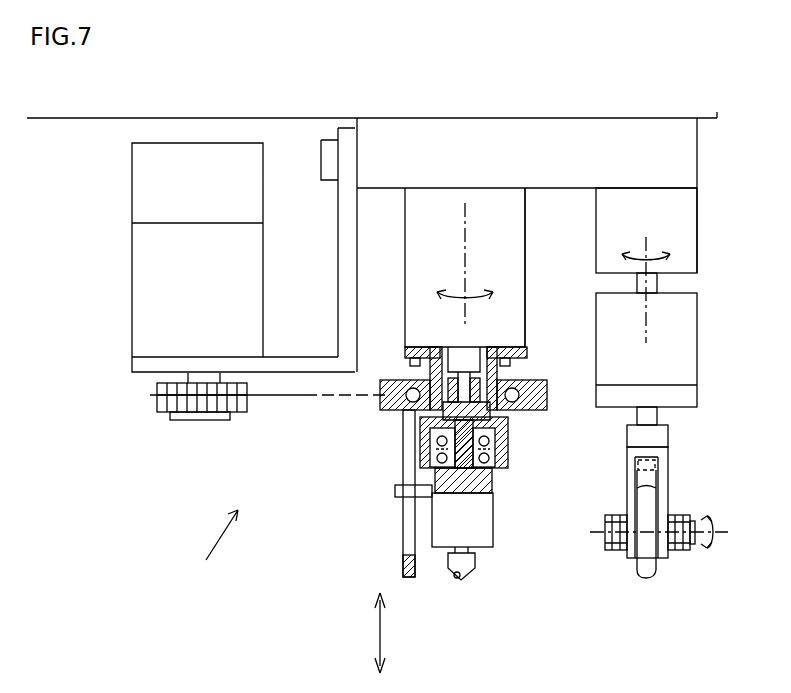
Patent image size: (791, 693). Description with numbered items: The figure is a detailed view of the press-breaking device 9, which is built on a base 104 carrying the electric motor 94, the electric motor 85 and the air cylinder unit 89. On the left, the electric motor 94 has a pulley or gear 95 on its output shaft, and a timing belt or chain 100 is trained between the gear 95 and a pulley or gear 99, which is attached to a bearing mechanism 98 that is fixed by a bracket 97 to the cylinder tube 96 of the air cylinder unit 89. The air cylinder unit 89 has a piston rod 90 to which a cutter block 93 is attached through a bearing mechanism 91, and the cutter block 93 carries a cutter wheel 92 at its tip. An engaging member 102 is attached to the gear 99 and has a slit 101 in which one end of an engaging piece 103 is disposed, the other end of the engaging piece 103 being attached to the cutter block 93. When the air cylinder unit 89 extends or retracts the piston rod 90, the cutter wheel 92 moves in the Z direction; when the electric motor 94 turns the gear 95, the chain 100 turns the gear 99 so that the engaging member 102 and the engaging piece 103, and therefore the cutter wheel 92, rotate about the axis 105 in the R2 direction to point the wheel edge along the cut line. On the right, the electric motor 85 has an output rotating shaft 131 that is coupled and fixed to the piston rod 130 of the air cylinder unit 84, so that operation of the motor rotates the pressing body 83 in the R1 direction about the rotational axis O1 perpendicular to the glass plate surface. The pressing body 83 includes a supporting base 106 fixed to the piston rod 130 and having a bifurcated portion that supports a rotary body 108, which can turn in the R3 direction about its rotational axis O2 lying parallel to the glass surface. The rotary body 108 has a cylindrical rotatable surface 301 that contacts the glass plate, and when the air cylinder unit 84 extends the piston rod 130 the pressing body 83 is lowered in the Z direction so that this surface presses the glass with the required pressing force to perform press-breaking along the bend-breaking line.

The press-breaking device 9 is at (210, 550).
The pressing body 83 is at (679, 470).
The air cylinder unit 84 is at (680, 353).
The electric motor 85 is at (685, 205).
The air cylinder unit 89 is at (512, 222).
The piston rod 90 is at (490, 374).
The bearing mechanism 91 is at (488, 478).
The cutter wheel 92 is at (460, 584).
The cutter block 93 is at (487, 537).
The electric motor 94 is at (148, 203).
The pulley or gear 95 is at (152, 413).
The cylinder tube 96 is at (515, 305).
The bracket 97 is at (505, 412).
The bearing mechanism 98 is at (410, 393).
The pulley or gear 99 is at (533, 407).
The timing belt or chain 100 is at (297, 398).
The slit 101 is at (405, 545).
The engaging member 102 is at (420, 445).
The engaging piece 103 is at (395, 490).
The base 104 is at (696, 150).
The axis 105 is at (468, 287).
The supporting base 106 is at (632, 478).
The rotary body 108 is at (648, 572).
The piston rod 130 is at (650, 418).
The output rotating shaft 131 is at (650, 282).
The cylindrical rotatable surface 301 is at (648, 553).
The R1 direction R1 is at (672, 258).
The R2 direction R2 is at (433, 298).
The R3 direction R3 is at (712, 512).
The rotational axis O1 is at (650, 323).
The rotational axis O2 is at (690, 536).
The Z direction Z is at (378, 633).